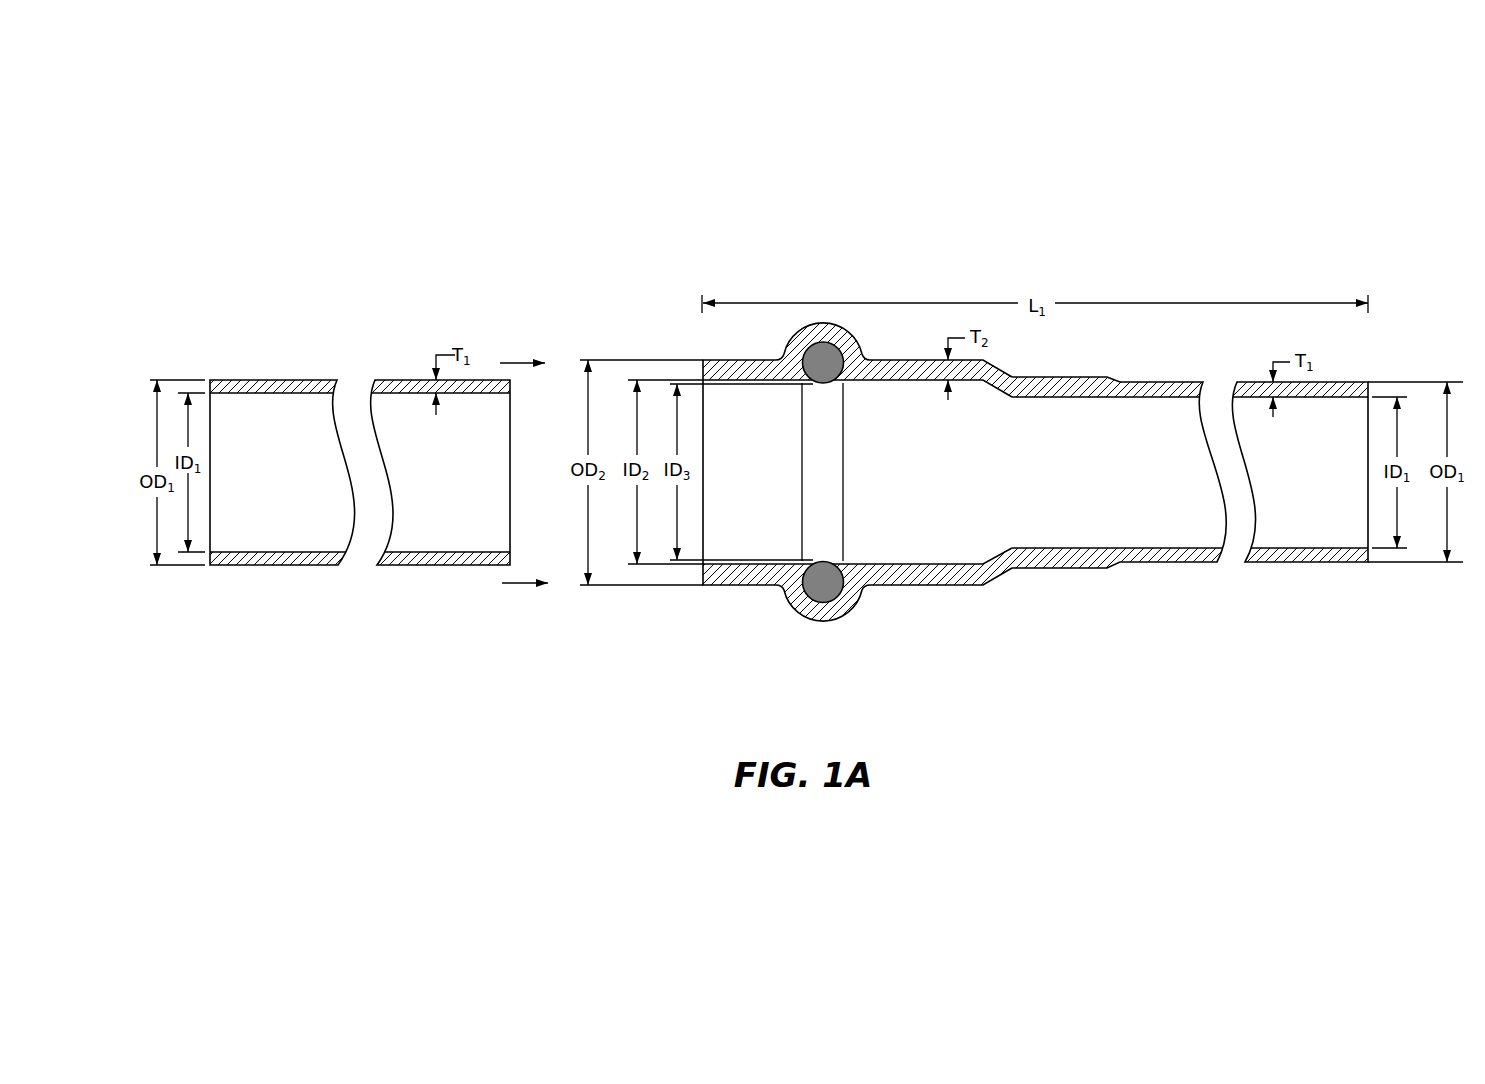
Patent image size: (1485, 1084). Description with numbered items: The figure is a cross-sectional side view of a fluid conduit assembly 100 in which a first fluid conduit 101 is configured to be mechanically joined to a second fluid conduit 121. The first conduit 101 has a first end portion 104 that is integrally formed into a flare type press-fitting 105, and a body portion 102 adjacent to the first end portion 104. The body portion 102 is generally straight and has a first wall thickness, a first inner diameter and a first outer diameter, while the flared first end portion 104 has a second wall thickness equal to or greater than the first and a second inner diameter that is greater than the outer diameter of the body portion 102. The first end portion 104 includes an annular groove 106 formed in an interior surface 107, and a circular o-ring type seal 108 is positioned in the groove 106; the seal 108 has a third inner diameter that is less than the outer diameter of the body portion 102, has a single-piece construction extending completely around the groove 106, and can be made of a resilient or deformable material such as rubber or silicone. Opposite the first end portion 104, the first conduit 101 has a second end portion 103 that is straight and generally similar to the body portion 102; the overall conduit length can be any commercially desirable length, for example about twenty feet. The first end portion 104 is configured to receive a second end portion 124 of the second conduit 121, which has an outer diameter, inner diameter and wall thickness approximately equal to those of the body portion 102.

The fluid conduit assembly 100 is at (1232, 195).
The first fluid conduit 101 is at (1052, 668).
The body portion 102 is at (1170, 595).
The second end portion 103 is at (1380, 570).
The first end portion 104 is at (783, 628).
The flare type press-fitting 105 is at (727, 360).
The annular groove 106 is at (837, 597).
The interior surface 107 is at (905, 564).
The o-ring type seal 108 is at (823, 368).
The second fluid conduit 121 is at (278, 632).
The second end portion 124 is at (457, 585).